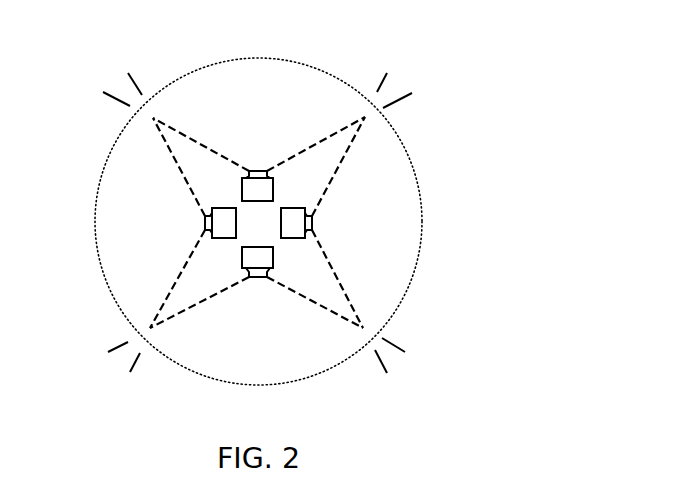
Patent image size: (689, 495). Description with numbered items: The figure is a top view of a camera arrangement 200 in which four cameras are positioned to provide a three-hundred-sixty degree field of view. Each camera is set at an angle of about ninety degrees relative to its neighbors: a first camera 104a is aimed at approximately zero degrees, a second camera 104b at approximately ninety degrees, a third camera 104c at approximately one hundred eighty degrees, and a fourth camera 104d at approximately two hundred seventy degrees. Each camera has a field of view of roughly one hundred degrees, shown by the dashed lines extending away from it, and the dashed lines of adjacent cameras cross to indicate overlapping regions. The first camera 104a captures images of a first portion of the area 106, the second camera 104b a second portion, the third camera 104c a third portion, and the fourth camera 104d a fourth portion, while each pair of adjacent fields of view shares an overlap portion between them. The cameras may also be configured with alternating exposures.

The camera arrangement 200 is at (474, 35).
The area 106 is at (415, 172).
The first camera 104a is at (313, 222).
The second camera 104b is at (257, 168).
The third camera 104c is at (206, 223).
The fourth camera 104d is at (259, 279).